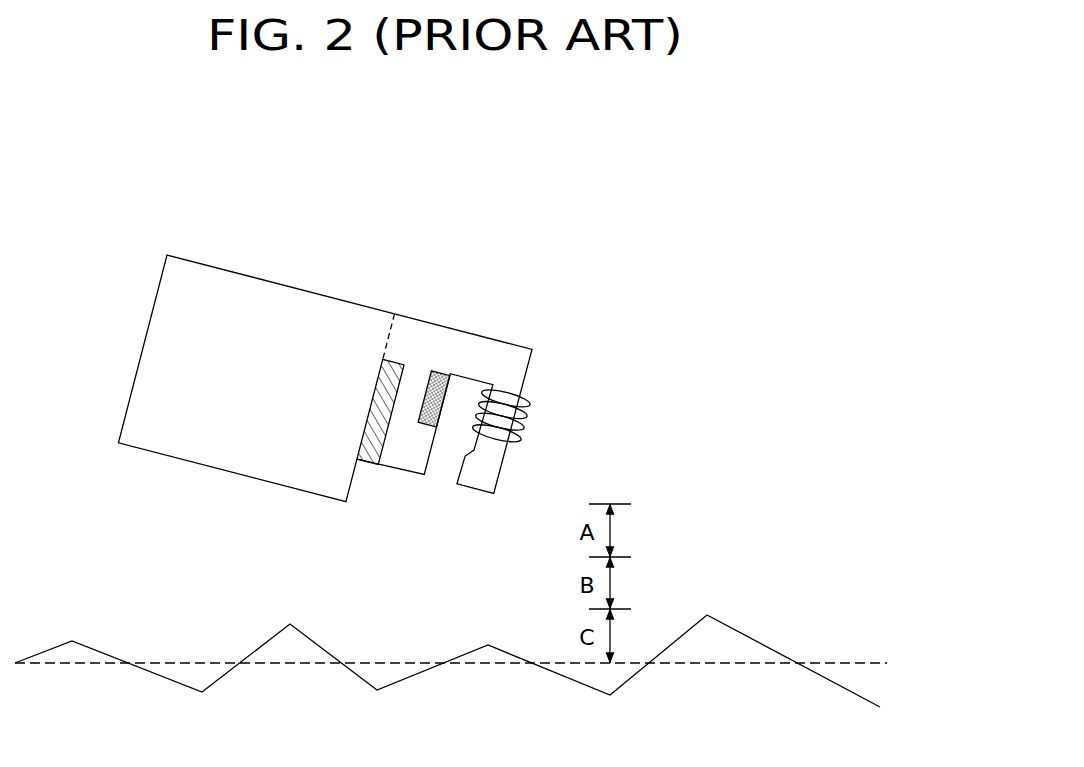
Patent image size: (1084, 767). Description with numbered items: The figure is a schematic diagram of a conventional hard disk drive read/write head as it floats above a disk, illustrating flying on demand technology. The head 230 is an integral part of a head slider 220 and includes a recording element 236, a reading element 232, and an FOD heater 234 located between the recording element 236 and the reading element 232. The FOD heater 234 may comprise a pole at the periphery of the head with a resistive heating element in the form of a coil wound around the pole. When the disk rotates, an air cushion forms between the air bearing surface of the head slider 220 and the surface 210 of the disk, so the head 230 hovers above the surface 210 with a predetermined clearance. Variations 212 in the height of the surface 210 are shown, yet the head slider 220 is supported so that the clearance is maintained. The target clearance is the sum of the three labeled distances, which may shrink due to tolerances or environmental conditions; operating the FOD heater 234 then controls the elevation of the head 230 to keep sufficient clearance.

The disk surface 210 is at (193, 662).
The variations in disk surface height 212 is at (318, 644).
The head slider 220 is at (166, 254).
The head 230 is at (508, 337).
The reading element 232 is at (400, 356).
The FOD heater 234 is at (452, 366).
The recording element 236 is at (534, 404).